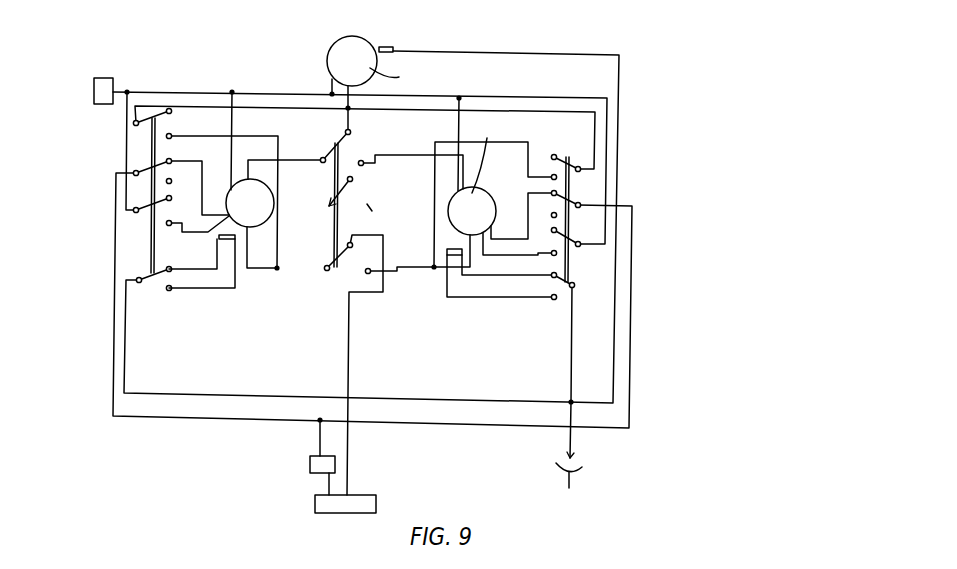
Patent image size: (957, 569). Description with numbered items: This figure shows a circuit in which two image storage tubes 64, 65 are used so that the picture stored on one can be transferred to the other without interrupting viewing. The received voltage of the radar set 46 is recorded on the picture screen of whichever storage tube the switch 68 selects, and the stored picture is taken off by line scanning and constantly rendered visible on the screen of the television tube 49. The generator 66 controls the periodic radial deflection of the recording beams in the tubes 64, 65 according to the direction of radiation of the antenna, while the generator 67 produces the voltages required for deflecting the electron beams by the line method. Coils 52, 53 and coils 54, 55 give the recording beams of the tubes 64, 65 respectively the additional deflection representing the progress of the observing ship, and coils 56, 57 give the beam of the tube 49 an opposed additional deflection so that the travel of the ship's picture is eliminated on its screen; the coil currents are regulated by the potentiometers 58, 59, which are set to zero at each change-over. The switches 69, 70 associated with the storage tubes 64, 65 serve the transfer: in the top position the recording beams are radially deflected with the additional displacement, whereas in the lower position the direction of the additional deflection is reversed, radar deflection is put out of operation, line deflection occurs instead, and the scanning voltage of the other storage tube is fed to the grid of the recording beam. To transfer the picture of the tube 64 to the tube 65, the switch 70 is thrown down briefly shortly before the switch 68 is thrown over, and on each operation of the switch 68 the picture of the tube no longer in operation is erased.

The radar set 46 is at (370, 498).
The television tube 49 is at (328, 56).
The coil 52 is at (198, 261).
The coil 53 is at (218, 240).
The coil 54 is at (486, 282).
The coil 55 is at (450, 256).
The coil 56 is at (415, 34).
The coil 57 is at (388, 43).
The potentiometer 58 is at (593, 474).
The potentiometer 59 is at (577, 474).
The storage tube 64 is at (257, 220).
The storage tube 65 is at (480, 202).
The generator 66 is at (310, 467).
The generator 67 is at (107, 84).
The switch 68 is at (344, 162).
The switch 69 is at (151, 147).
The switch 70 is at (577, 192).